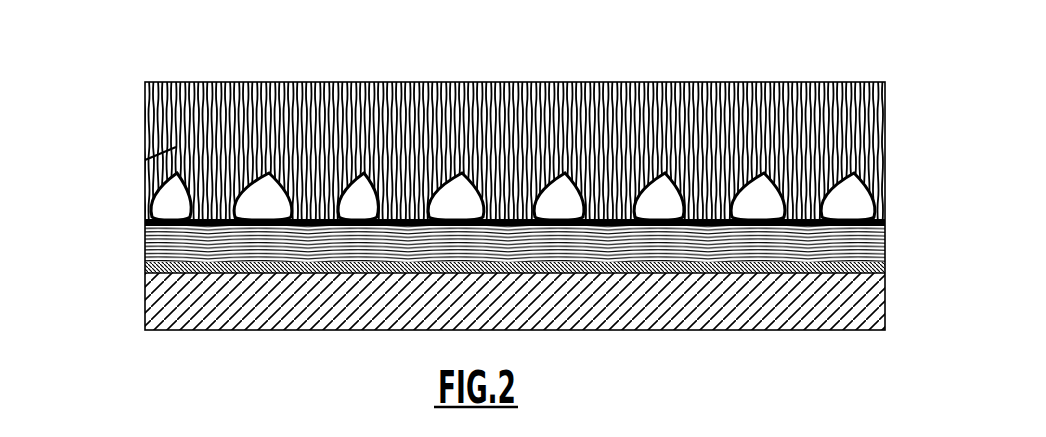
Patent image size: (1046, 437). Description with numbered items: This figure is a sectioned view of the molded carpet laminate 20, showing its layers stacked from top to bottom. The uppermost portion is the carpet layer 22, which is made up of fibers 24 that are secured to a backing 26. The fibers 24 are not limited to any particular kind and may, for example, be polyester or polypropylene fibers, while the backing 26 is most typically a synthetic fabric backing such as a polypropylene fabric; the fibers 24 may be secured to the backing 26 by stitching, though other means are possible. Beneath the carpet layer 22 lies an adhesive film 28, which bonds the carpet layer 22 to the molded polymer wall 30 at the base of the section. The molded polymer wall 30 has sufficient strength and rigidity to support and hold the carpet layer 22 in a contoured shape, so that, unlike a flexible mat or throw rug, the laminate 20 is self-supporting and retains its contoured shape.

The laminate 20 is at (116, 334).
The carpet layer 22 is at (518, 178).
The fibers 24 is at (168, 139).
The backing 26 is at (133, 217).
The adhesive film 28 is at (877, 262).
The molded polymer wall 30 is at (877, 302).